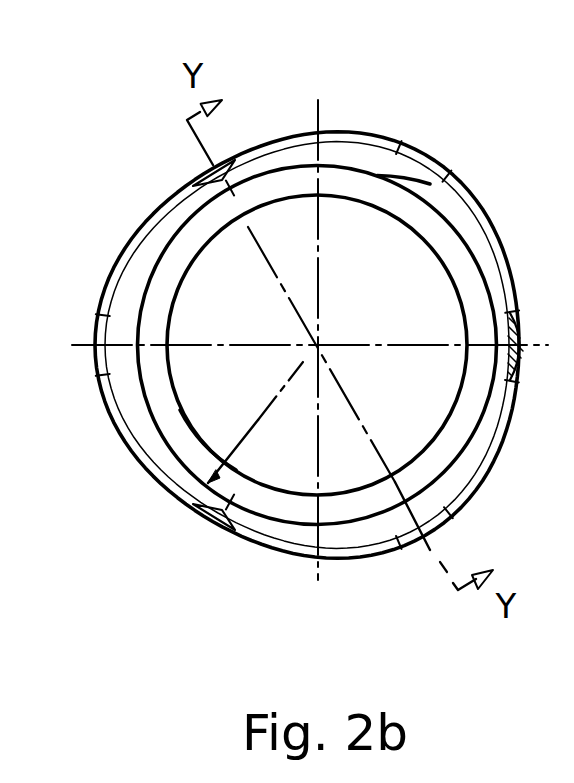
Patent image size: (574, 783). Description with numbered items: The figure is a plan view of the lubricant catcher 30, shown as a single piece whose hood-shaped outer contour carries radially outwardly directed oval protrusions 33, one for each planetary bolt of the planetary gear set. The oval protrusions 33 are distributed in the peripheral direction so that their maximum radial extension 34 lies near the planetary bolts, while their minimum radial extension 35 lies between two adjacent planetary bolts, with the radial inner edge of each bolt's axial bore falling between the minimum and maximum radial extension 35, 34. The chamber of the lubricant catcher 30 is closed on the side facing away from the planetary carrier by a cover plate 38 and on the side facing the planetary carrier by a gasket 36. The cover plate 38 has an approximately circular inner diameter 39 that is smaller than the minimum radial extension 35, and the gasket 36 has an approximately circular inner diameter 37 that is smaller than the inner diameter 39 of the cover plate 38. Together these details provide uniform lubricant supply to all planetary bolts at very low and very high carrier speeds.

The lubricant catcher 30 is at (165, 125).
The oval protrusions 33 is at (438, 152).
The maximum radial extension 34 is at (410, 503).
The minimum radial extension 35 is at (229, 456).
The gasket 36 is at (270, 187).
The inner diameter of the gasket 37 is at (438, 269).
The cover plate 38 is at (307, 155).
The inner diameter of the cover plate 39 is at (397, 190).